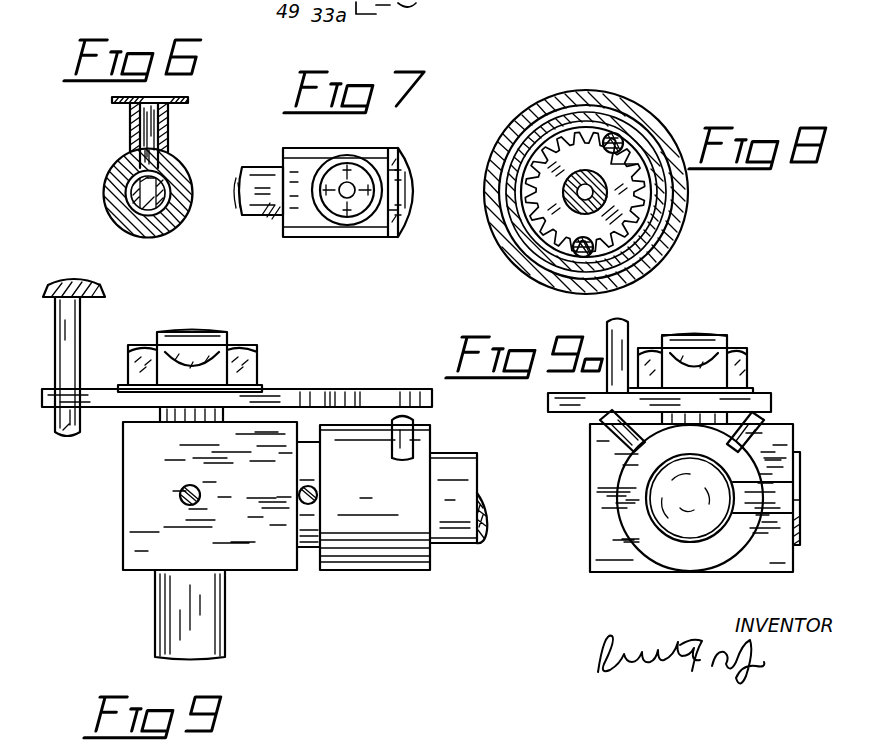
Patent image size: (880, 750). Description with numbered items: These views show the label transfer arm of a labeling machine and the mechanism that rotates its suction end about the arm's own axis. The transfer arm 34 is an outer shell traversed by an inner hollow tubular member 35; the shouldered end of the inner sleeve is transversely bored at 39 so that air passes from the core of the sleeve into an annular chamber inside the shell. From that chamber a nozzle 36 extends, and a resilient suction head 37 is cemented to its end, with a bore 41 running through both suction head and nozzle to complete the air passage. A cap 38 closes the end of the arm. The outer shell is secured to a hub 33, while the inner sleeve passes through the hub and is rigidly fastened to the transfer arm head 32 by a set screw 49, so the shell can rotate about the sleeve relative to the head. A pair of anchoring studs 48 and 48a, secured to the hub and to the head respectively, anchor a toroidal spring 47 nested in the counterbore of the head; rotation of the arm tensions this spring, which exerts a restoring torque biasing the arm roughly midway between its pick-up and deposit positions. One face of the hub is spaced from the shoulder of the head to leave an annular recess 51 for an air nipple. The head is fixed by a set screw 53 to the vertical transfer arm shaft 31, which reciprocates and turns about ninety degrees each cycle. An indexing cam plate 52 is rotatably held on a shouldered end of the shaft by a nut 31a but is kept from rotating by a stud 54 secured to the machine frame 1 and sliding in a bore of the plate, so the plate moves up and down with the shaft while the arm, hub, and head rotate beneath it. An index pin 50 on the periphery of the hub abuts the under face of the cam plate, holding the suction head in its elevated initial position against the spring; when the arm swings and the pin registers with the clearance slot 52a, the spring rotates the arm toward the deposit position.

In FIG. 9, the machine frame 1 is at (100, 286).
In FIG. 9, the transfer arm shaft 31 is at (225, 610).
In FIG. 9, the nut 31a is at (240, 340).
In FIG. 9A, the nut 31a is at (738, 345).
In FIG. 9, the transfer arm head 32 is at (123, 554).
In FIG. 9A, the transfer arm head 32 is at (590, 556).
In FIG. 7, the hub 33 is at (342, 192).
In FIG. 8, the hub 33 is at (686, 218).
In FIG. 9, the hub 33 is at (430, 560).
In FIG. 6, the transfer arm 34 is at (106, 177).
In FIG. 9, the transfer arm 34 is at (470, 460).
In FIG. 7, the inner hollow tubular member 35 is at (250, 218).
In FIG. 8, the inner hollow tubular member 35 is at (590, 178).
In FIG. 9, the inner hollow tubular member 35 is at (483, 500).
In FIG. 6, the nozzle 36 is at (168, 130).
In FIG. 6, the suction head 37 is at (188, 99).
In FIG. 7, the suction head 37 is at (355, 158).
In FIG. 9A, the suction head 37 is at (800, 458).
In FIG. 7, the cap 38 is at (412, 160).
In FIG. 6, the transverse bore 39 is at (131, 193).
In FIG. 7, the bore 41 is at (343, 196).
In FIG. 8, the toroidal spring 47 is at (622, 150).
In FIG. 8, the anchoring stud 48 is at (582, 237).
In FIG. 8, the anchoring stud 48a is at (624, 167).
In FIG. 9, the set screw 49 is at (314, 487).
In FIG. 9, the index pin 50 is at (413, 420).
In FIG. 9A, the index pin 50 is at (600, 420).
In FIG. 9, the annular recess 51 is at (310, 560).
In FIG. 9, the indexing cam plate 52 is at (432, 399).
In FIG. 9A, the indexing cam plate 52 is at (771, 400).
In FIG. 9, the clearance slot 52a is at (368, 372).
In FIG. 9, the set screw 53 is at (180, 486).
In FIG. 9, the stud 54 is at (82, 318).
In FIG. 9A, the stud 54 is at (628, 328).